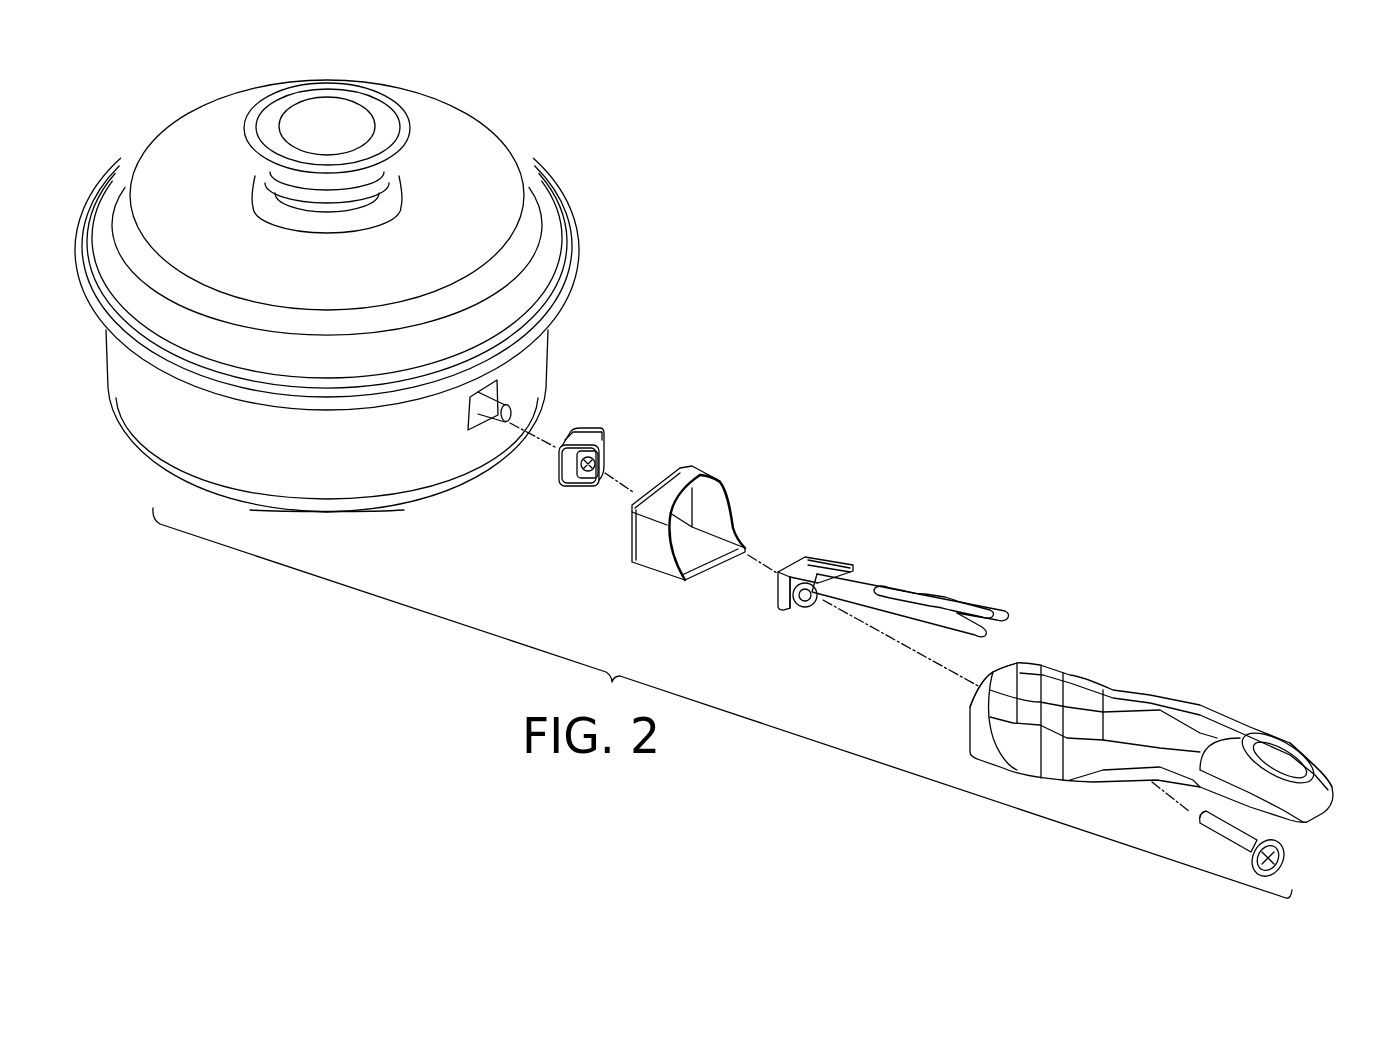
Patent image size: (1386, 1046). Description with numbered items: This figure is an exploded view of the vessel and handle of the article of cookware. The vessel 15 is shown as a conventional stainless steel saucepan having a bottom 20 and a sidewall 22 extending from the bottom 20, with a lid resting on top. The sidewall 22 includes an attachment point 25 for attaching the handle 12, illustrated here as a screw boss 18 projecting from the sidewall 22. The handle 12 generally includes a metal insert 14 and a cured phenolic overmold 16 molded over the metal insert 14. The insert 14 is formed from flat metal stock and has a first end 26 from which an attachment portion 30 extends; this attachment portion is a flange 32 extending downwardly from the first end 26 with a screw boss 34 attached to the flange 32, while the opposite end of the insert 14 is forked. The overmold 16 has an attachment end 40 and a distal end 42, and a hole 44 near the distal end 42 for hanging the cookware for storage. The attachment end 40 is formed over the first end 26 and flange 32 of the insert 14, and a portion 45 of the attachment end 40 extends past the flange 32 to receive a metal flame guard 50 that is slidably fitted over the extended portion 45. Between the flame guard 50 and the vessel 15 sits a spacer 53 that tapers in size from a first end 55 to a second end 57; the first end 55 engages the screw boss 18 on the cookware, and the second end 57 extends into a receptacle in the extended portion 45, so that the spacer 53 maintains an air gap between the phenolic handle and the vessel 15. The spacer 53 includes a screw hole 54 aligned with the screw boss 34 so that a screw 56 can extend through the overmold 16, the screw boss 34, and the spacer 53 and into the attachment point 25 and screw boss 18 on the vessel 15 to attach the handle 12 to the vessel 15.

The cookware handle 12 is at (941, 565).
The metal insert 14 is at (827, 562).
The vessel 15 is at (540, 358).
The overmold 16 is at (1155, 708).
The screw boss 18 is at (500, 397).
The bottom 20 is at (330, 512).
The sidewall 22 is at (145, 412).
The attachment point 25 is at (460, 443).
The first end 26 is at (802, 557).
The attachment portion 30 is at (792, 607).
The flange 32 is at (777, 590).
The screw boss 34 is at (812, 605).
The attachment end 40 is at (978, 737).
The distal end 42 is at (1335, 790).
The hole 44 is at (1272, 743).
The extended portion 45 is at (1002, 670).
The metal flame guard 50 is at (692, 480).
The spacer 53 is at (593, 428).
The screw hole 54 is at (587, 482).
The first end 55 is at (560, 465).
The screw 56 is at (1277, 837).
The second end 57 is at (600, 443).